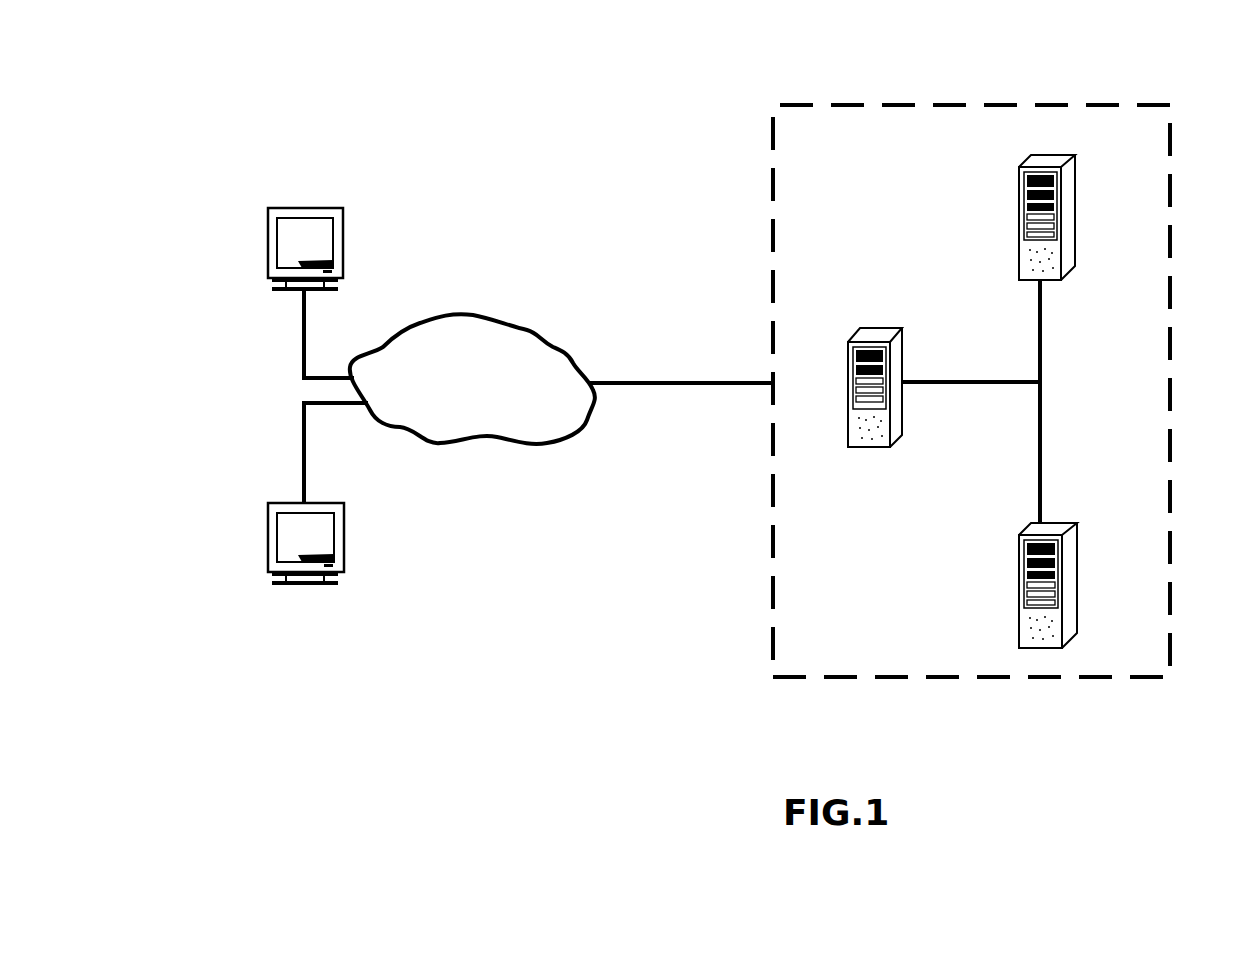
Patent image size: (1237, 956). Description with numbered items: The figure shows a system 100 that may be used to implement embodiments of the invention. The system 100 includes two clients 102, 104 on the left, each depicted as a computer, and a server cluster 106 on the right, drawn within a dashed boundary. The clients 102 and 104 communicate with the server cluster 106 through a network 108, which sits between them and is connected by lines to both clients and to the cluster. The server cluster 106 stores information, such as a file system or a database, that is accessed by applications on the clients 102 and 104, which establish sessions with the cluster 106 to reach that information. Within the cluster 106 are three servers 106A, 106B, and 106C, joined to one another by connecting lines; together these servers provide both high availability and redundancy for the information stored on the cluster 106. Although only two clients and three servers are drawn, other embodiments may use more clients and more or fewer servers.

The system 100 is at (463, 76).
The client 102 is at (268, 232).
The client 104 is at (268, 537).
The server cluster 106 is at (1142, 105).
The server 106A is at (1019, 220).
The server 106B is at (877, 447).
The server 106C is at (1019, 585).
The network 108 is at (462, 314).